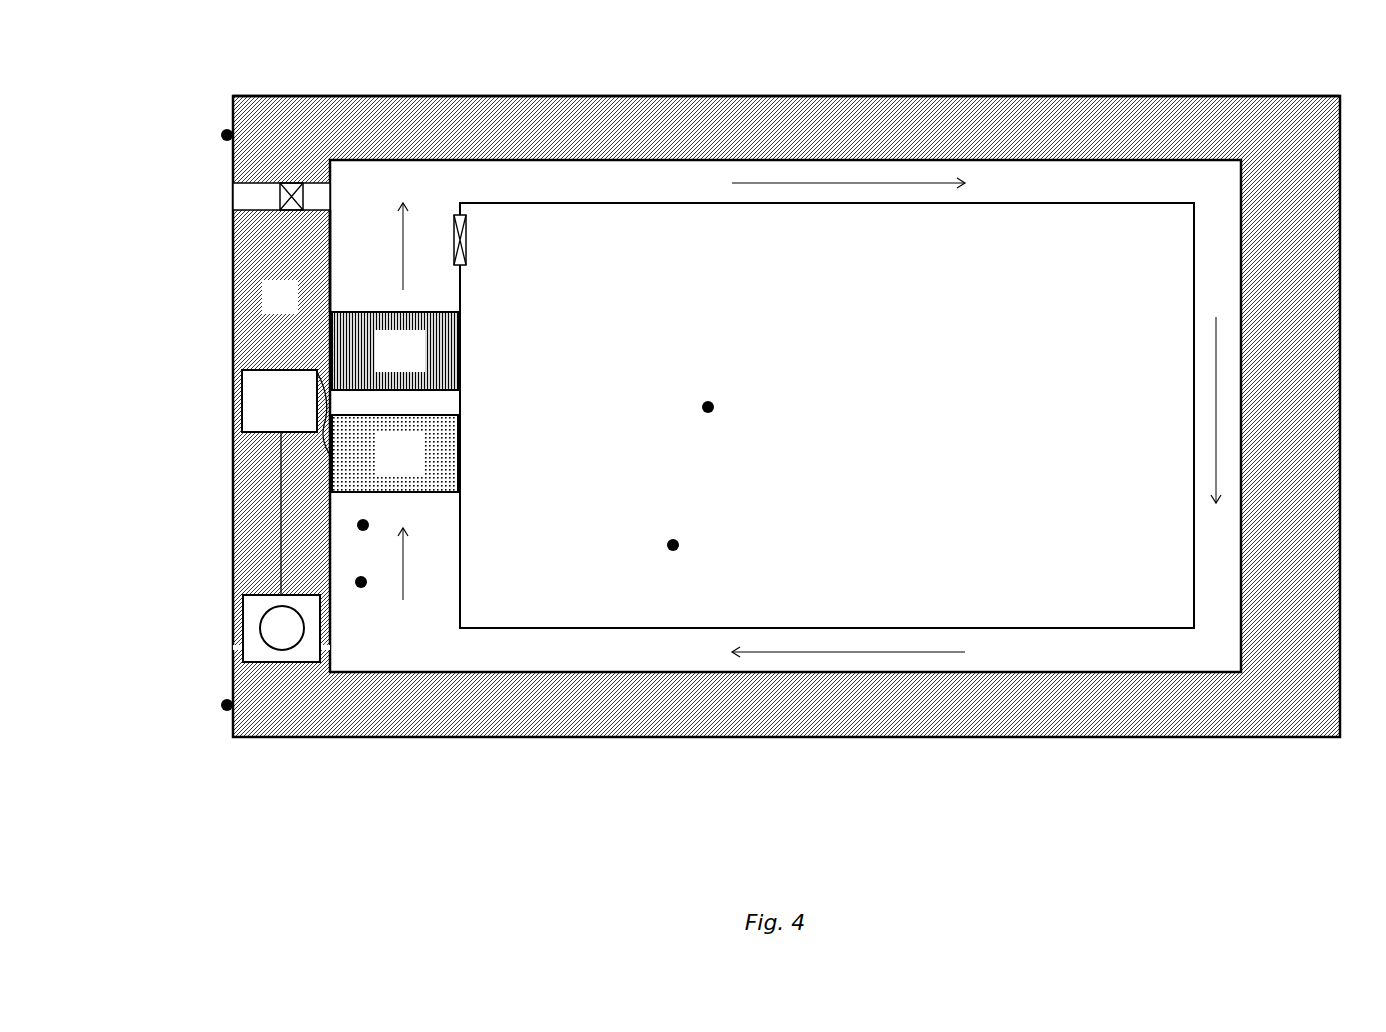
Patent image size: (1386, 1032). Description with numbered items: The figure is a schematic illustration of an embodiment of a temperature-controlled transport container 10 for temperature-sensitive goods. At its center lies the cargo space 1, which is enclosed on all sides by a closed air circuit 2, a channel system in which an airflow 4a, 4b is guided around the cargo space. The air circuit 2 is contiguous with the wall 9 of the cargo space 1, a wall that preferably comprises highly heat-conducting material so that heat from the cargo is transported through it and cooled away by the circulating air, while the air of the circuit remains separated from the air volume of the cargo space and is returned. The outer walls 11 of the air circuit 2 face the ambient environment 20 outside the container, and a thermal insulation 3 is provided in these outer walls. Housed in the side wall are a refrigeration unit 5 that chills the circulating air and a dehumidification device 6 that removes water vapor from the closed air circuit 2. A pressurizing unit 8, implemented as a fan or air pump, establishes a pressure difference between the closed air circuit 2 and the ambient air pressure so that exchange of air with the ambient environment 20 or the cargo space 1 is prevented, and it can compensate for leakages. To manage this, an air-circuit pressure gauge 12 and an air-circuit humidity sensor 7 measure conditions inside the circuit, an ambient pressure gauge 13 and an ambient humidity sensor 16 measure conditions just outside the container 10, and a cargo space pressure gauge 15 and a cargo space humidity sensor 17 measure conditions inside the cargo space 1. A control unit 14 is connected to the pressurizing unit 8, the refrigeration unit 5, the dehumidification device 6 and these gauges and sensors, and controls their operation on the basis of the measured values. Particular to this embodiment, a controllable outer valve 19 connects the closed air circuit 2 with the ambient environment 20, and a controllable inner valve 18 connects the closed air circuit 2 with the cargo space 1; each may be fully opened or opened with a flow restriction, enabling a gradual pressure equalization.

The cargo space 1 is at (827, 415).
The closed air circuit 2 is at (878, 411).
The thermal insulation 3 is at (296, 262).
The airflow 4a is at (420, 246).
The airflow 4b is at (421, 564).
The refrigeration unit 5 is at (395, 351).
The dehumidification device 6 is at (395, 453).
The air-circuit humidity sensor 7 is at (350, 517).
The pressurizing unit 8 is at (243, 623).
The wall 9 is at (1022, 207).
The temperature-controlled transport container 10 is at (302, 88).
The outer walls 11 is at (670, 158).
The air-circuit pressure gauge 12 is at (350, 575).
The ambient pressure gauge 13 is at (222, 700).
The control unit 14 is at (268, 395).
The cargo space pressure gauge 15 is at (663, 543).
The ambient humidity sensor 16 is at (214, 130).
The cargo space humidity sensor 17 is at (698, 404).
The controllable inner valve 18 is at (468, 238).
The controllable outer valve 19 is at (278, 201).
The ambient environment 20 is at (786, 72).